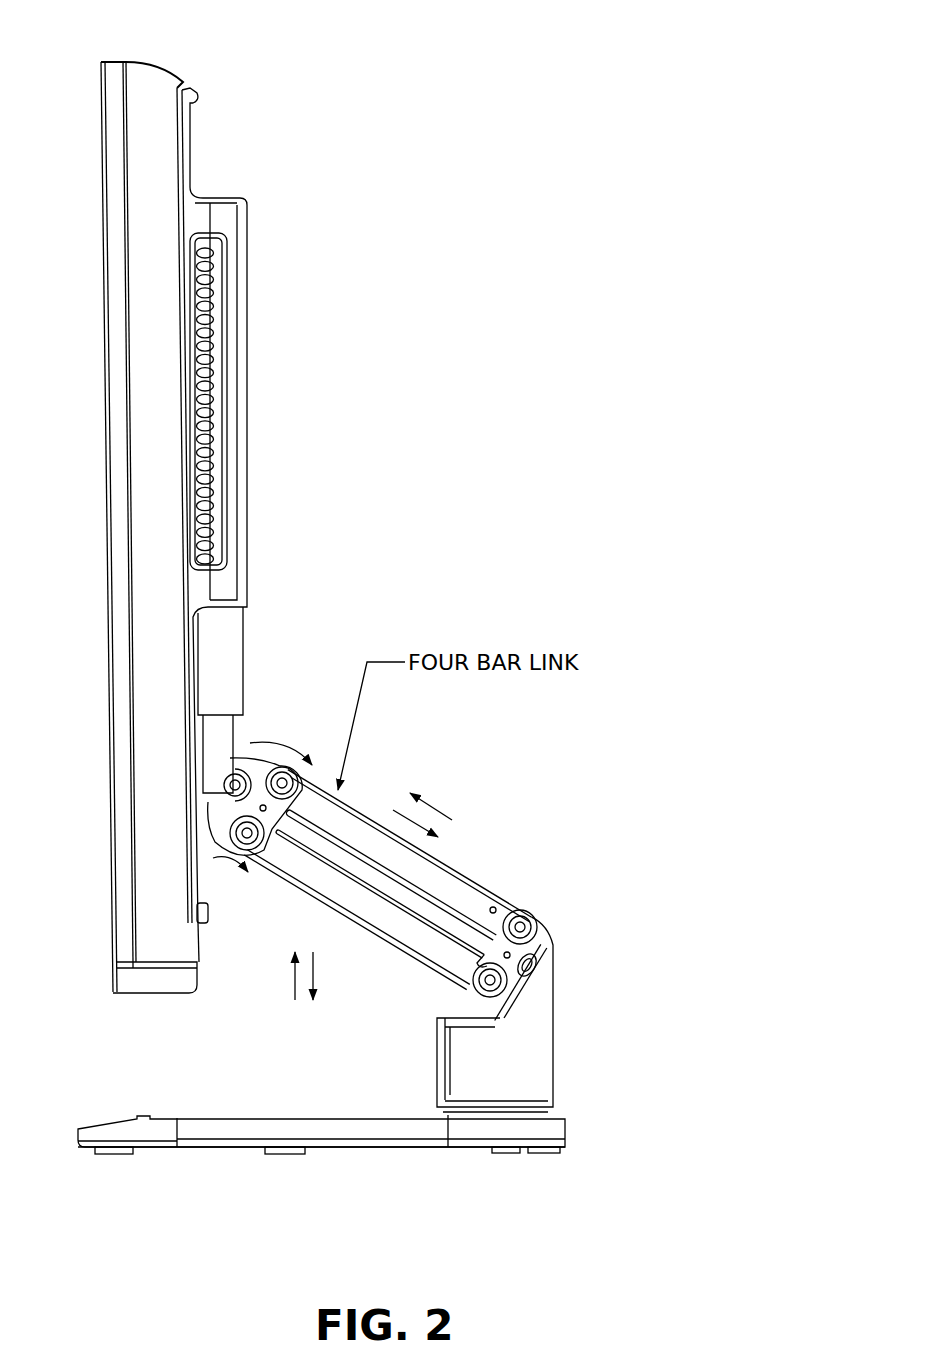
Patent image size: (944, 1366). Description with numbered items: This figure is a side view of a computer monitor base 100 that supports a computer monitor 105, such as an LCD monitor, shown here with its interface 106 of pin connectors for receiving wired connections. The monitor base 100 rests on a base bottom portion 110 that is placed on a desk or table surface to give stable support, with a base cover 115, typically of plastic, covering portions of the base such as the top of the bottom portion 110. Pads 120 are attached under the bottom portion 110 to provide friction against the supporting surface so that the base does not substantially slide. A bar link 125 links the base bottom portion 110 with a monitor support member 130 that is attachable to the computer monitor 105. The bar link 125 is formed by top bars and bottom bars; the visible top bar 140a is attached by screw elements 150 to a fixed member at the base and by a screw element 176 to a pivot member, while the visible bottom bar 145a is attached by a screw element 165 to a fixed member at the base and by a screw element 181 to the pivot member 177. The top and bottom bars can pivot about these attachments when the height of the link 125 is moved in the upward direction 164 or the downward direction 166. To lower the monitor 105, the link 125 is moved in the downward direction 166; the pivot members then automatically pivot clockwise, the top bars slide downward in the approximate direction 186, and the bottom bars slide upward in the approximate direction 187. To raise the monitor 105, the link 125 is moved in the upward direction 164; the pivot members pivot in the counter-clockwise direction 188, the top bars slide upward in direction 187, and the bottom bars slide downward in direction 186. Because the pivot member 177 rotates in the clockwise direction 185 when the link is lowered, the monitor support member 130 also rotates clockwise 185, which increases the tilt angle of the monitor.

The computer monitor base 100 is at (555, 1028).
The computer monitor 105 is at (155, 75).
The interface (pin connectors) 106 is at (217, 260).
The base bottom portion 110 is at (566, 1148).
The base cover 115 is at (256, 1118).
The pads 120 is at (117, 1155).
The bar link 125 is at (457, 858).
The monitor support member 130 is at (205, 865).
The top bar 140a is at (487, 902).
The bottom bar 145a is at (407, 927).
The screw elements 150 is at (538, 923).
The upward direction 164 is at (288, 990).
The screw element 165 is at (483, 962).
The downward direction 166 is at (320, 1002).
The screw element 176 is at (283, 762).
The pivot member 177 is at (255, 765).
The screw element 181 is at (245, 851).
The clockwise direction 185 is at (273, 743).
The approximate direction 186 is at (400, 814).
The approximate direction 187 is at (445, 808).
The counter-clockwise direction 188 is at (213, 863).